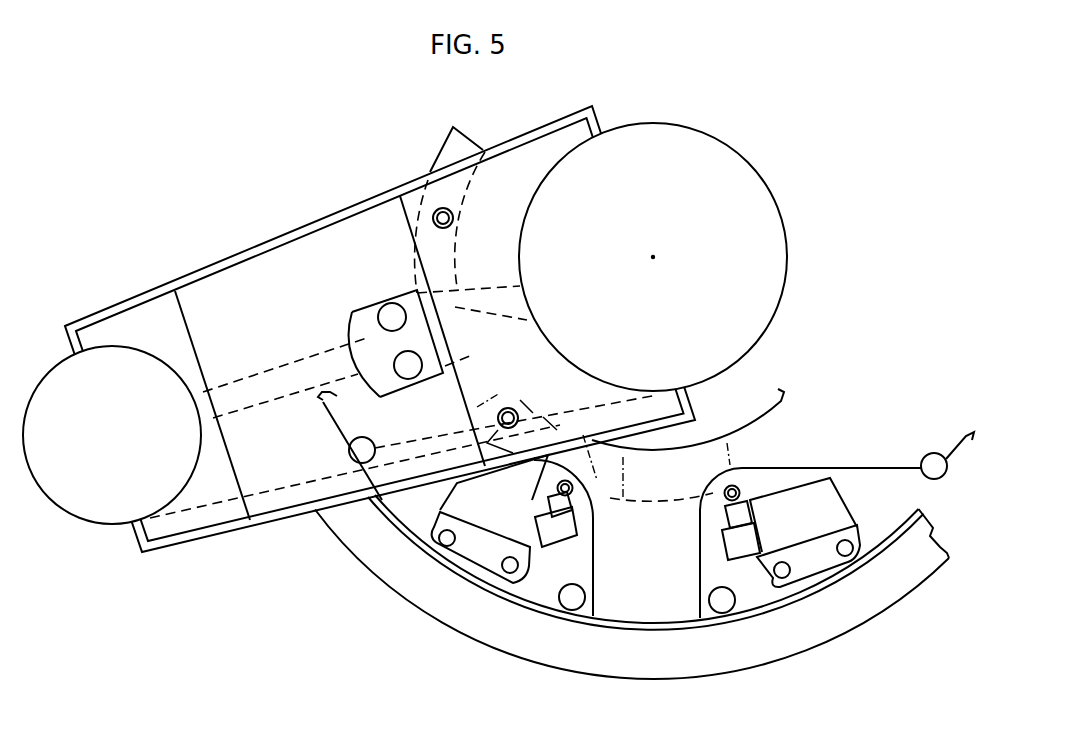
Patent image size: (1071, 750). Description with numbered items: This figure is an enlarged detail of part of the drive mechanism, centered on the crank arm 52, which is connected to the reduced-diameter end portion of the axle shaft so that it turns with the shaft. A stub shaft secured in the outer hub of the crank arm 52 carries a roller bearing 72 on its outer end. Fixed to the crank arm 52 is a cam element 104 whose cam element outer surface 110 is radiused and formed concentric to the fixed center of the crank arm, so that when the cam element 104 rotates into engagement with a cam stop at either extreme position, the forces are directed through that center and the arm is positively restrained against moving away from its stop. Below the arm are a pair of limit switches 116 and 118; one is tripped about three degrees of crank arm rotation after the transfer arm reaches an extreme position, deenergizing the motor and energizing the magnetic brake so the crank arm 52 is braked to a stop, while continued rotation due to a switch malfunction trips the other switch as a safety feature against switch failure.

The crank arm 52 is at (268, 234).
The roller bearing 72 is at (118, 528).
The cam element 104 is at (366, 306).
The cam element outer surface 110 is at (352, 330).
The limit switch 116 is at (548, 549).
The limit switch 118 is at (757, 560).